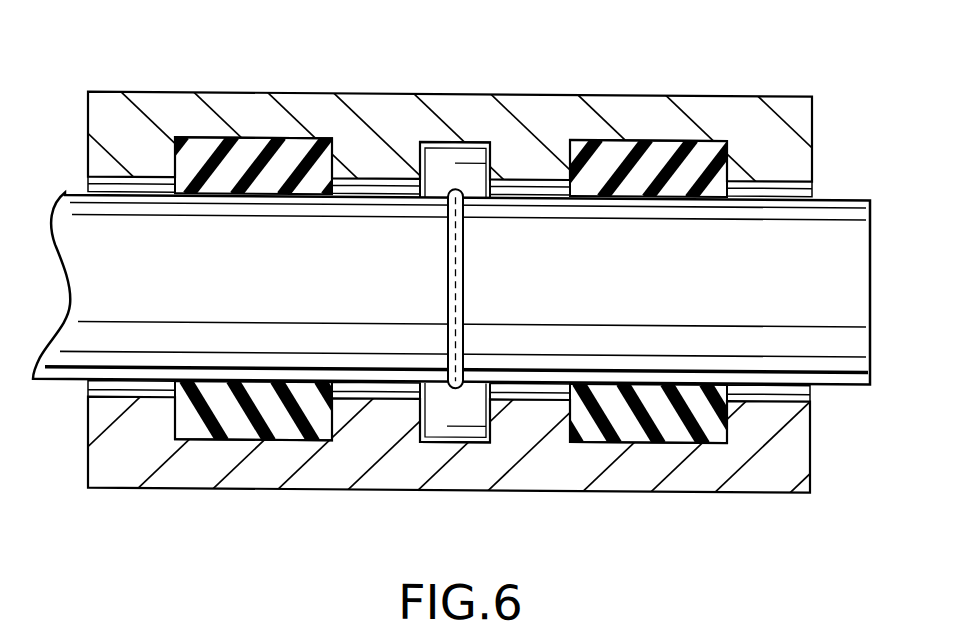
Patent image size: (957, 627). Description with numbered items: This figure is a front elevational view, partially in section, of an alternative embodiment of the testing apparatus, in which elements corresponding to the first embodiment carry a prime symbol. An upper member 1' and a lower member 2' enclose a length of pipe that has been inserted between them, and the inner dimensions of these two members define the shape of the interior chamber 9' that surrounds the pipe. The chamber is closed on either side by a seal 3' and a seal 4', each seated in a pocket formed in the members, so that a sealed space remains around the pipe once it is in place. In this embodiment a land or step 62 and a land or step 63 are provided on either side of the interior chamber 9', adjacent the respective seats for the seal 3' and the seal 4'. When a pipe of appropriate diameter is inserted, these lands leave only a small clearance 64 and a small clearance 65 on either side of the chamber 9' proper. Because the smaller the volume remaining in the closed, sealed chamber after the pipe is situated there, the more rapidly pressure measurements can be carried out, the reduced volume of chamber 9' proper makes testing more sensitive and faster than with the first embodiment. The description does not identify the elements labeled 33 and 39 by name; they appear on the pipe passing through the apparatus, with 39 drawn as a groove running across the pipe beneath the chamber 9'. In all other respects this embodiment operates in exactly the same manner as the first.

The member 1' is at (450, 107).
The member 2' is at (472, 474).
The seal 3' is at (255, 290).
The seal 4' is at (641, 300).
The interior chamber 9' is at (455, 277).
The shaft 33 is at (845, 210).
The circumferential groove 39 is at (455, 191).
The land or step 62 is at (385, 127).
The land or step 63 is at (522, 155).
The clearance 64 is at (380, 191).
The clearance 65 is at (517, 191).